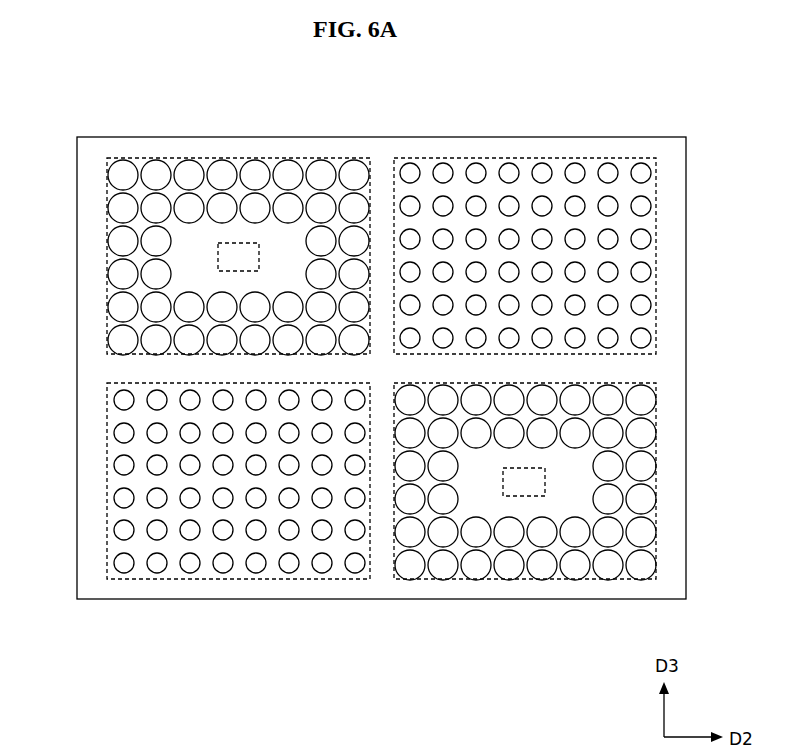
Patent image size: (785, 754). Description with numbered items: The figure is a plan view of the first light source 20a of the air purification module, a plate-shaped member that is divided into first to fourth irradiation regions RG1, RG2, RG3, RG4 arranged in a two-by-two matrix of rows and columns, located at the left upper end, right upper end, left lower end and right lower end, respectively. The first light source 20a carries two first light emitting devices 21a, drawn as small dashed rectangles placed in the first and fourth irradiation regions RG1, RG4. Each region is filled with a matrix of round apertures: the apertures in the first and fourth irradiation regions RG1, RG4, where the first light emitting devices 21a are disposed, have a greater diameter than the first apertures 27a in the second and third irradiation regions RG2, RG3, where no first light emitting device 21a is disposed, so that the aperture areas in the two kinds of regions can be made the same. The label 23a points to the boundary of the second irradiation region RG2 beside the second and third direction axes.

The first light source 20a is at (686, 545).
The first light emitting device 21a is at (218, 263).
The small hole 23a is at (668, 248).
The first aperture 27a is at (640, 400).
The first irradiation region RG1 is at (228, 158).
The second irradiation region RG2 is at (579, 220).
The third irradiation region RG3 is at (227, 579).
The fourth irradiation region RG4 is at (580, 519).